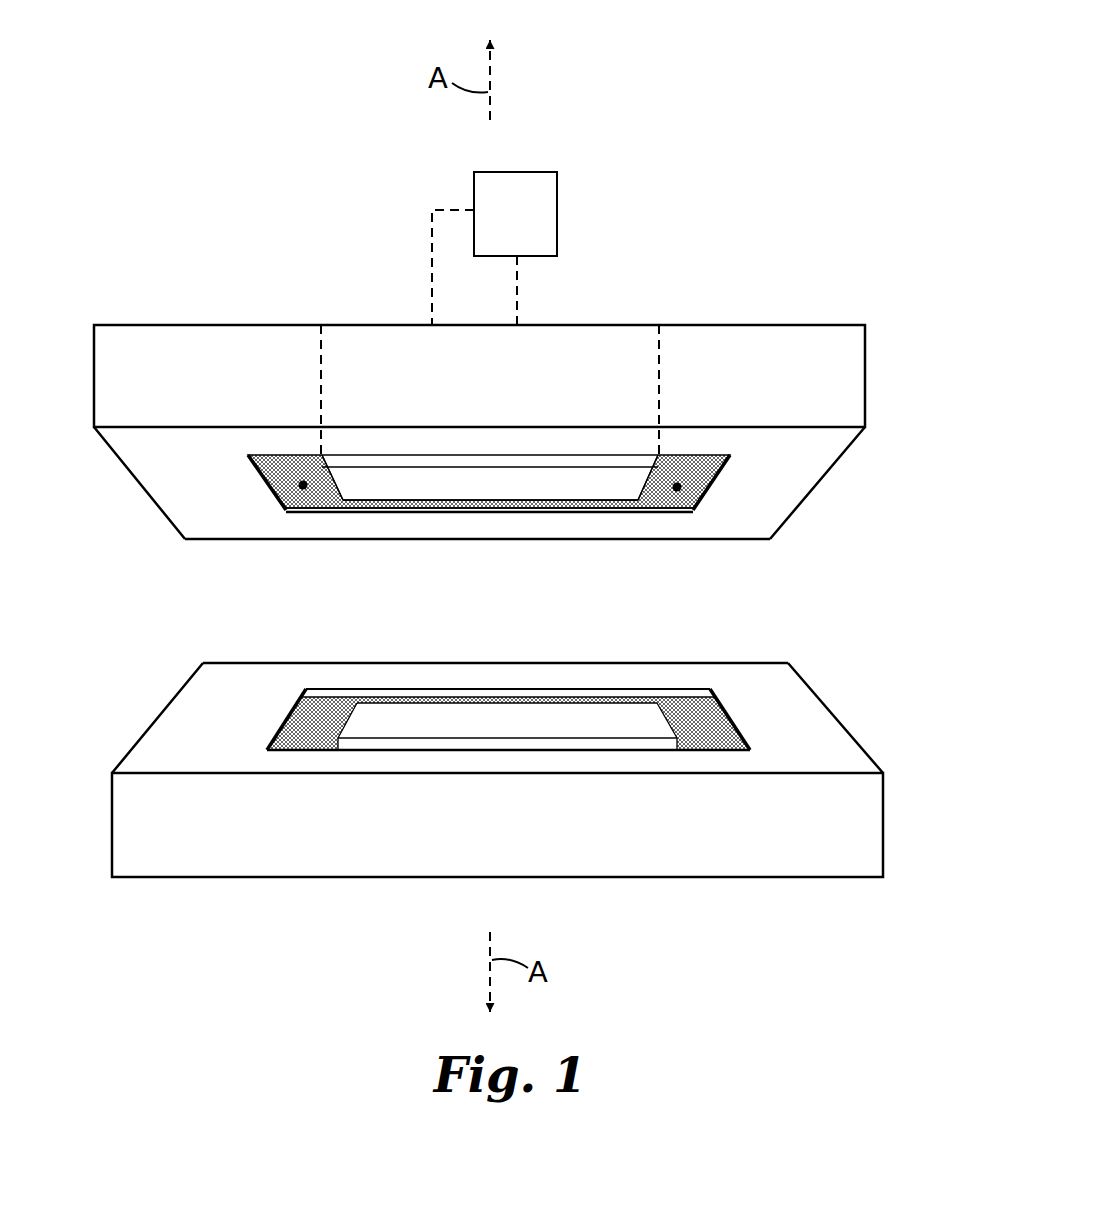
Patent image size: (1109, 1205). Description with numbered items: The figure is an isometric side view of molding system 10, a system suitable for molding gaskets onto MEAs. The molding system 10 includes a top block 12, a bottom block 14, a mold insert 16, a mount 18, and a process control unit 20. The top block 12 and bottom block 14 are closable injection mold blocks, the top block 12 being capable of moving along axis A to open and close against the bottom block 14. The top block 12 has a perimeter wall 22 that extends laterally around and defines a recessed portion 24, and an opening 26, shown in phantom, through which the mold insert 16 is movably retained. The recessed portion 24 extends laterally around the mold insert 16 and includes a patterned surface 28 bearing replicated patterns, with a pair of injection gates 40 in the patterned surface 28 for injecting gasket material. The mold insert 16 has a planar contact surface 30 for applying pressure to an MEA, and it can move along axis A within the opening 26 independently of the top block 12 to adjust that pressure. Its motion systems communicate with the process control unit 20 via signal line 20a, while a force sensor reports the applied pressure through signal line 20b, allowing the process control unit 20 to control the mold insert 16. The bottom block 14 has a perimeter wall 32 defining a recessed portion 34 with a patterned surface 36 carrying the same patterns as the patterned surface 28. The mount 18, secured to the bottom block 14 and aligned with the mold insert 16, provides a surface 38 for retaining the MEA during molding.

The molding system 10 is at (765, 75).
The top block 12 is at (808, 290).
The bottom block 14 is at (782, 918).
The mold insert 16 is at (385, 492).
The mount 18 is at (443, 700).
The process control unit 20 is at (538, 173).
The signal line 20a is at (430, 263).
The signal line 20b is at (517, 278).
The perimeter wall 22 is at (155, 485).
The recessed portion 24 is at (671, 522).
The opening 26 is at (662, 371).
The patterned surface 28 is at (313, 497).
The contact surface 30 is at (460, 488).
The perimeter wall 32 is at (188, 722).
The recessed portion 34 is at (721, 696).
The patterned surface 36 is at (323, 710).
The surface 38 is at (535, 715).
The injection gates 40 is at (303, 485).